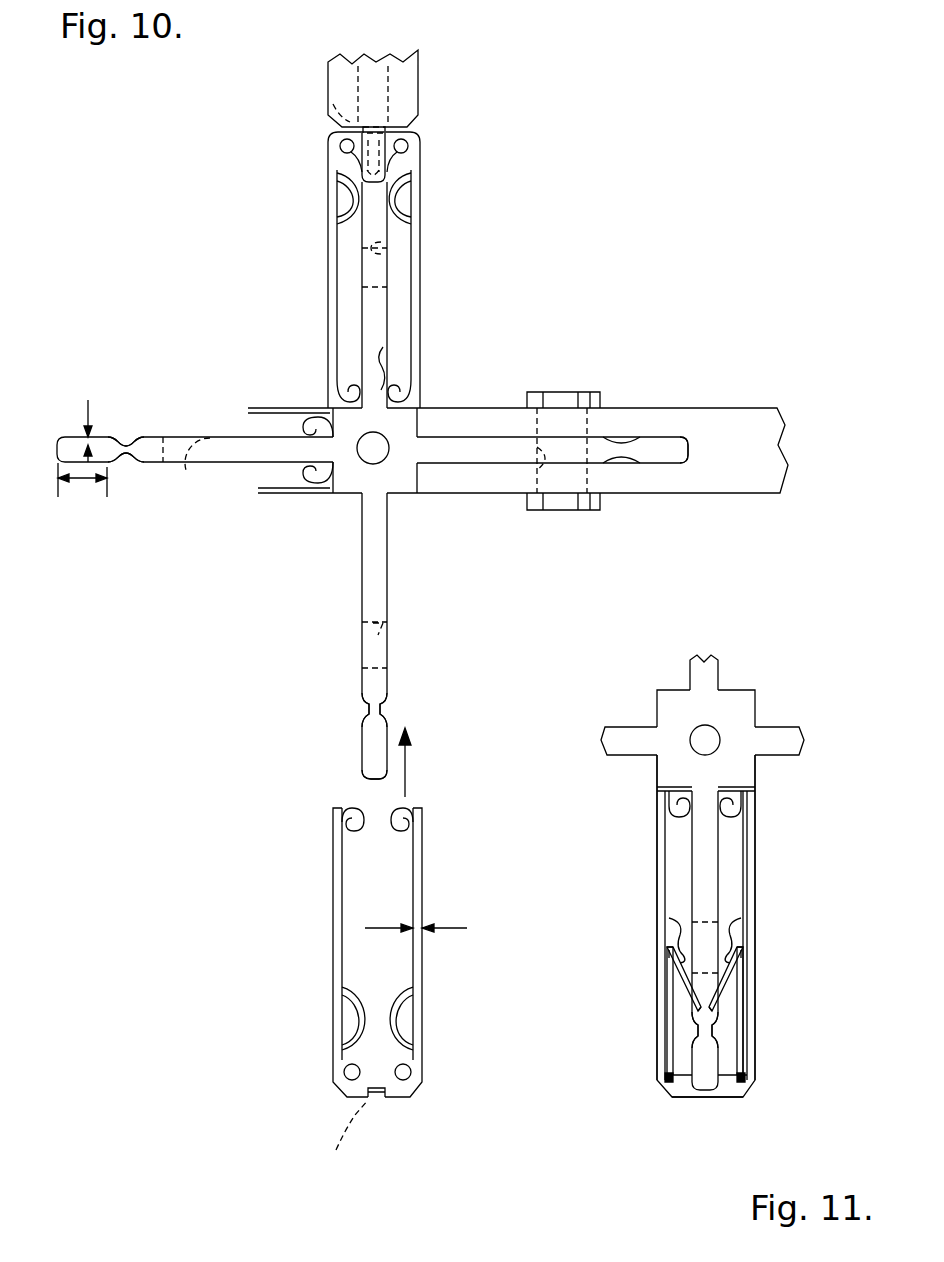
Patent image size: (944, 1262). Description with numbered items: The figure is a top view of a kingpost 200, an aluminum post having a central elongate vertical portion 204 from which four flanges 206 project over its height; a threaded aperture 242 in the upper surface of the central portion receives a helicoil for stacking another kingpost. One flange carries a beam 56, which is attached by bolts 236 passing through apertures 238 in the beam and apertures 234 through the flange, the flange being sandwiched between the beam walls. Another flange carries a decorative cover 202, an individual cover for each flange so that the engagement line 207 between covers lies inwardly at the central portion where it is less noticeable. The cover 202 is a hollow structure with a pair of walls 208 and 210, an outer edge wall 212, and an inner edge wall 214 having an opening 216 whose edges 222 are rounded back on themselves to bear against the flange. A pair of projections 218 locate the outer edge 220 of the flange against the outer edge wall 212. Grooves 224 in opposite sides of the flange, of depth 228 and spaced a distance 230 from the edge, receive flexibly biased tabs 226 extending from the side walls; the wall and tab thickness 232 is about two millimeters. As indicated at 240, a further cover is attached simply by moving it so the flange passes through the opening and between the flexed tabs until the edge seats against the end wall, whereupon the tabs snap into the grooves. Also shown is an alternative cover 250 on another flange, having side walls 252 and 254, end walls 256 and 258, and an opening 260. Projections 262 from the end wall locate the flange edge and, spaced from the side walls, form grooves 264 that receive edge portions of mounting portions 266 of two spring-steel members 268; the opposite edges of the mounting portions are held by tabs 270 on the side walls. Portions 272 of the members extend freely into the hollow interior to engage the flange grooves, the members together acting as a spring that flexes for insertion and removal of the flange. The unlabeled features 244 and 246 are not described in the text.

In FIG. 10, the beam 56 is at (757, 408).
In FIG. 10, the kingpost 200 is at (345, 493).
In FIG. 11, the kingpost 200 is at (755, 690).
In FIG. 10, the decorative cover 202 is at (415, 135).
In FIG. 10, the central elongate vertical portion 204 is at (402, 493).
In FIG. 11, the central elongate vertical portion 204 is at (675, 690).
In FIG. 10, the flange 206 is at (411, 293).
In FIG. 11, the flange 206 is at (620, 727).
In FIG. 10, the engagement line 207 is at (330, 405).
In FIG. 10, the wall 208 is at (421, 310).
In FIG. 10, the wall 210 is at (328, 266).
In FIG. 10, the outer edge wall 212 is at (386, 130).
In FIG. 10, the inner edge wall 214 is at (425, 410).
In FIG. 10, the opening 216 is at (412, 333).
In FIG. 10, the projections 218 is at (340, 150).
In FIG. 10, the outer edge 220 is at (690, 450).
In FIG. 11, the outer edge 220 is at (705, 1097).
In FIG. 10, the edges 222 is at (297, 407).
In FIG. 10, the grooves 224 is at (352, 198).
In FIG. 11, the grooves 224 is at (697, 1030).
In FIG. 10, the tabs 226 is at (345, 220).
In FIG. 10, the depth 228 is at (88, 418).
In FIG. 10, the distance 230 is at (80, 483).
In FIG. 10, the thickness 232 is at (450, 928).
In FIG. 10, the apertures 234 is at (387, 248).
In FIG. 10, the bolts 236 is at (560, 510).
In FIG. 10, the apertures 238 is at (582, 420).
In FIG. 10, the cover attachment movement 240 is at (407, 775).
In FIG. 10, the threaded aperture 242 is at (370, 463).
In FIG. 11, the threaded aperture 242 is at (708, 745).
In FIG. 10, the support block 244 is at (403, 58).
In FIG. 10, the hidden edge 246 is at (332, 103).
In FIG. 11, the kingpost cover 250 is at (755, 866).
In FIG. 11, the side wall 252 is at (755, 888).
In FIG. 11, the side wall 254 is at (657, 875).
In FIG. 11, the end wall 256 is at (712, 1097).
In FIG. 11, the end wall 258 is at (668, 798).
In FIG. 11, the opening 260 is at (715, 798).
In FIG. 11, the projections 262 is at (668, 1060).
In FIG. 11, the grooves 264 is at (667, 1078).
In FIG. 11, the mounting portions 266 is at (672, 1005).
In FIG. 11, the members 268 is at (668, 990).
In FIG. 11, the tabs 270 is at (665, 921).
In FIG. 11, the portions 272 is at (680, 1013).